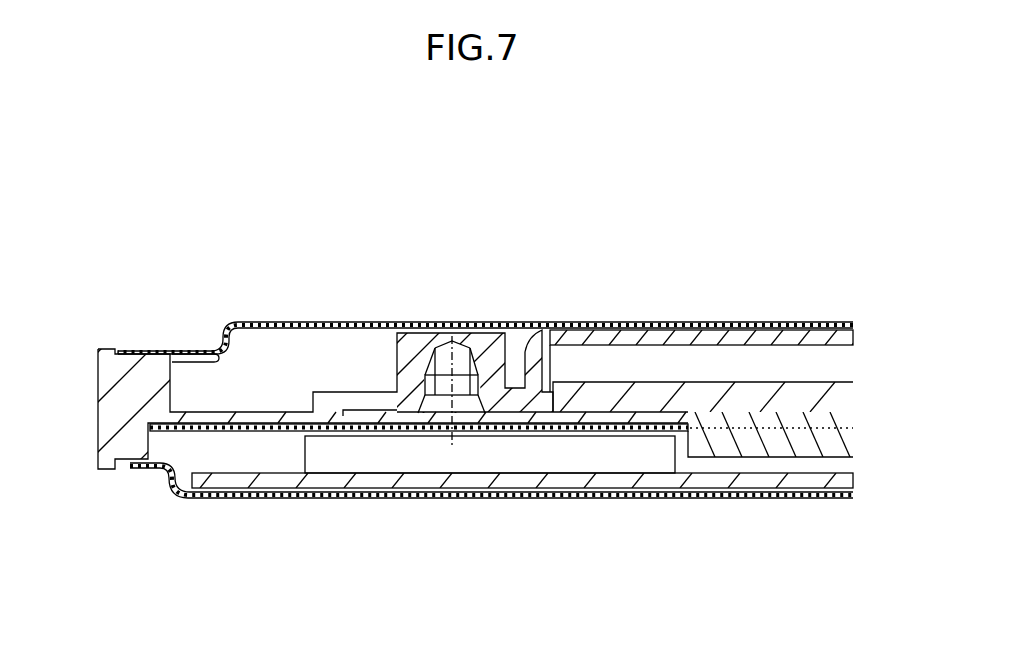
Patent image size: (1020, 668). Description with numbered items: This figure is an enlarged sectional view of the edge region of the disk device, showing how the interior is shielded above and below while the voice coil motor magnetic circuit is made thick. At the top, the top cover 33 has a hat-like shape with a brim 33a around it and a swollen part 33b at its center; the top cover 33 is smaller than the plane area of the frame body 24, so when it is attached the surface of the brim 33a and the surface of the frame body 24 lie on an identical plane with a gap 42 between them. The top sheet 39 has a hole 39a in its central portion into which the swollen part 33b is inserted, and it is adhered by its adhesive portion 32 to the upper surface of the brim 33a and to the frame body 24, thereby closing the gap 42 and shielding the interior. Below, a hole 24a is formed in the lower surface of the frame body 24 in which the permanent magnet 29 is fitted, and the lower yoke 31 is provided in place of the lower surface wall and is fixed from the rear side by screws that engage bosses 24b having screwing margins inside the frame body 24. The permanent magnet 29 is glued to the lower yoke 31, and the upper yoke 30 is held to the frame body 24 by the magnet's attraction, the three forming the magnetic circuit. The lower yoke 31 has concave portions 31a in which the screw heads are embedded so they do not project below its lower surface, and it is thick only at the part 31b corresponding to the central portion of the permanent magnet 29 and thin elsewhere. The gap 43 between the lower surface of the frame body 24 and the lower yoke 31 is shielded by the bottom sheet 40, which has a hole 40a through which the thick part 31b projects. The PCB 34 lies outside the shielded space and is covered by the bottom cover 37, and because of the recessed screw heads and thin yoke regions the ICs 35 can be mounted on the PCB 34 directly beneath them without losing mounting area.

The frame body 24 is at (108, 362).
The hole 24a is at (548, 395).
The bosses 24b is at (413, 337).
The permanent magnet 29 is at (690, 393).
The upper yoke 30 is at (600, 330).
The lower yoke 31 is at (818, 424).
The concave portions 31a is at (423, 440).
The thick part of lower yoke 31b is at (743, 443).
The adhesive portion 32 is at (98, 376).
The top cover 33 is at (262, 320).
The brim 33a is at (197, 426).
The swollen part 33b is at (292, 318).
The PCB 34 is at (338, 488).
The ICs 35 is at (557, 463).
The bottom cover 37 is at (224, 498).
The top sheet 39 is at (173, 358).
The hole 39a is at (217, 348).
The bottom sheet 40 is at (243, 432).
The hole 40a is at (689, 433).
The gap 42 is at (145, 352).
The gap 43 is at (352, 410).